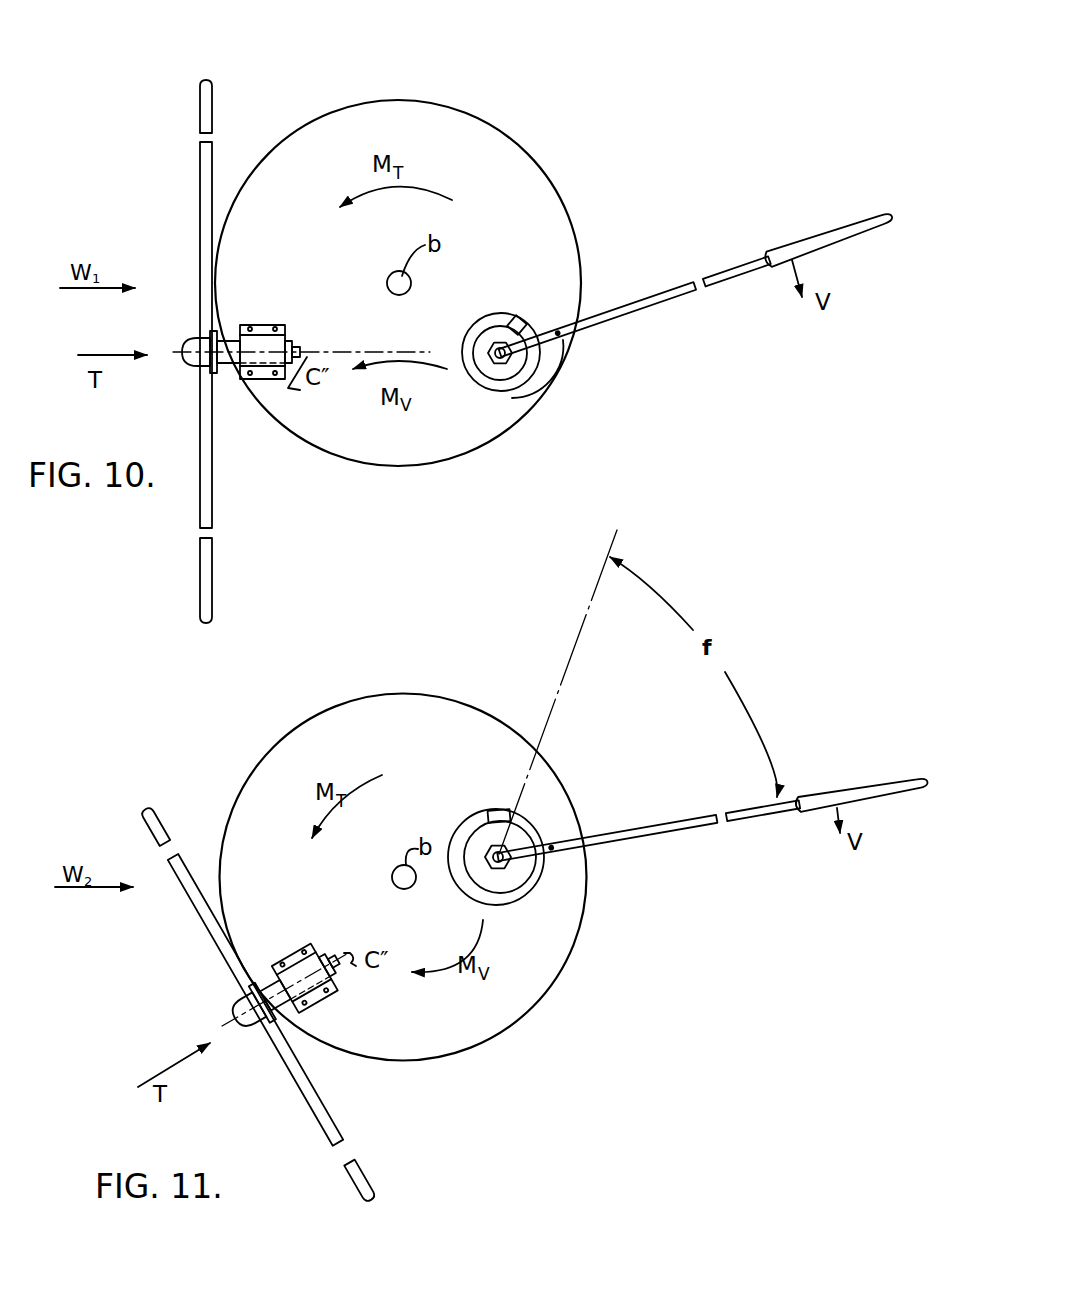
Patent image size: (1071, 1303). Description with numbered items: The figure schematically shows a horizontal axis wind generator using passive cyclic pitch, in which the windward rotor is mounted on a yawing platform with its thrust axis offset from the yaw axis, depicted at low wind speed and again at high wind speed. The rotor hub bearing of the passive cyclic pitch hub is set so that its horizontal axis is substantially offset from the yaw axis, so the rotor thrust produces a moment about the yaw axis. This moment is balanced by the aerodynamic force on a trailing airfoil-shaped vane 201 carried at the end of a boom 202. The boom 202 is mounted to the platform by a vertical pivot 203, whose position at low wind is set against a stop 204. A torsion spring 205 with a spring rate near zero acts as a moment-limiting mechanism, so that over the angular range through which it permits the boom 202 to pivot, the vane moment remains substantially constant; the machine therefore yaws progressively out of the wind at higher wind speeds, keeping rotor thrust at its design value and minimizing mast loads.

In FIG. 10, the trailing airfoil-shaped vane 201 is at (822, 253).
In FIG. 11, the trailing airfoil-shaped vane 201 is at (879, 784).
In FIG. 10, the boom 202 is at (640, 313).
In FIG. 11, the boom 202 is at (657, 823).
In FIG. 10, the vertical pivot 203 is at (505, 357).
In FIG. 11, the vertical pivot 203 is at (503, 870).
In FIG. 10, the stop 204 is at (518, 317).
In FIG. 11, the stop 204 is at (502, 808).
In FIG. 10, the torsion spring 205 is at (512, 398).
In FIG. 11, the torsion spring 205 is at (460, 823).